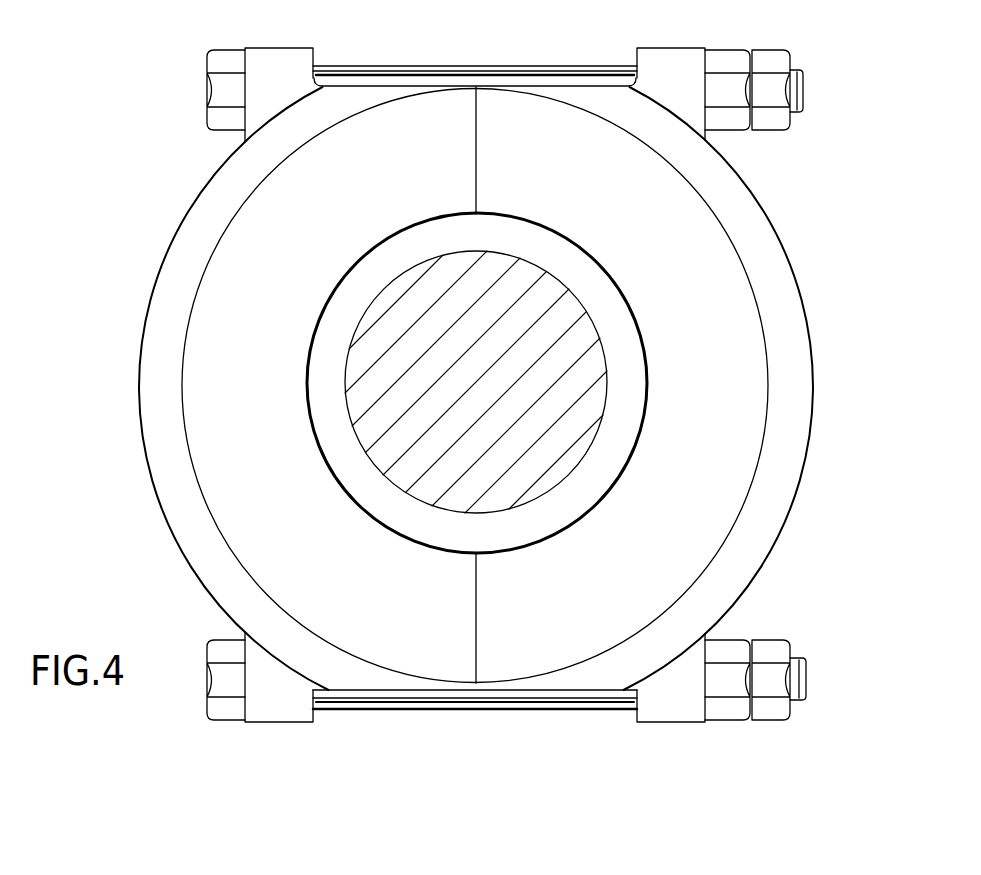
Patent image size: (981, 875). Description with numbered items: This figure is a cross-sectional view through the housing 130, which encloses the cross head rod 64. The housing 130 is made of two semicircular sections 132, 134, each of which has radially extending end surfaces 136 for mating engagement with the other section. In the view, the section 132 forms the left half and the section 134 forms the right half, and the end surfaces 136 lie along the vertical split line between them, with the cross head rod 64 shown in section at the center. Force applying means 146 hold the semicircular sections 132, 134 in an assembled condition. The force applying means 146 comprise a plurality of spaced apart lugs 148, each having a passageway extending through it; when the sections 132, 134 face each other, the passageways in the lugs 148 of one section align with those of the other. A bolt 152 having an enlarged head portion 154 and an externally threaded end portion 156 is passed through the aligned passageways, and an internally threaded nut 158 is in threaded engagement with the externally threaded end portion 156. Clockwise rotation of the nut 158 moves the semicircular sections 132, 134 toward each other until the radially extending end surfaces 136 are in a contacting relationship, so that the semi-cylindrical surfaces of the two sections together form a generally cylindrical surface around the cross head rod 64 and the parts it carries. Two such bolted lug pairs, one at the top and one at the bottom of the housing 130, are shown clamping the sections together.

The cross head rod 64 is at (484, 345).
The housing 130 is at (484, 390).
The semicircular section 132 is at (140, 390).
The semicircular section 134 is at (813, 373).
The radially extending end surfaces 136 is at (477, 140).
The force applying means 146 is at (205, 155).
The lugs 148 is at (293, 57).
The bolt 152 is at (404, 66).
The enlarged head portion 154 is at (218, 97).
The externally threaded end portion 156 is at (803, 83).
The internally threaded nut 158 is at (722, 58).